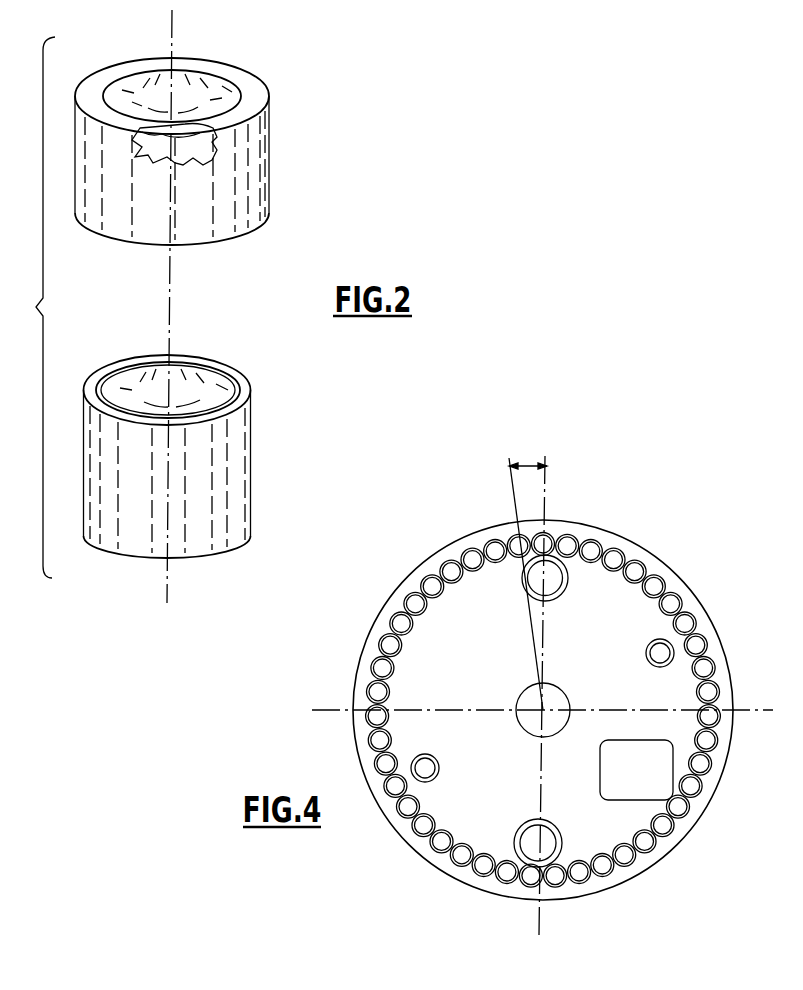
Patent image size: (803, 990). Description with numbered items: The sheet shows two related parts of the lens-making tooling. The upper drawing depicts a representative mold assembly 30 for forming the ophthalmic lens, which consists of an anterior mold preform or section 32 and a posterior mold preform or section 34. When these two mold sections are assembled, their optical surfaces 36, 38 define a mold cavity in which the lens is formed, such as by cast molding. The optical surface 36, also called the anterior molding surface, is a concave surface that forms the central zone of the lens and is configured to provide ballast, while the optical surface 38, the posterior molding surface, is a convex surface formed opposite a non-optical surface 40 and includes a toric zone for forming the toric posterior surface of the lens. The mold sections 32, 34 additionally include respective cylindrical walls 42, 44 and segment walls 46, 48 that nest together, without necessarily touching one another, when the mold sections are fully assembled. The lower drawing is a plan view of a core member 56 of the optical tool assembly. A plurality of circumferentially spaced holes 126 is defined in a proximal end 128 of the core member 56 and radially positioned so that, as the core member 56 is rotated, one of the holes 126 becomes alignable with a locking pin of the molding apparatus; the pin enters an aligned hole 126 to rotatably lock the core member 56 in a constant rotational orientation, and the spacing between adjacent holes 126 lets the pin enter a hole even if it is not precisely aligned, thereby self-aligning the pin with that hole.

In FIG. 2, the mold assembly 30 is at (171, 308).
In FIG. 2, the anterior mold section 32 is at (199, 471).
In FIG. 2, the posterior mold section 34 is at (207, 127).
In FIG. 2, the optical surface 36 is at (203, 378).
In FIG. 2, the optical surface 38 is at (165, 140).
In FIG. 2, the non-optical surface 40 is at (187, 80).
In FIG. 2, the cylindrical wall 42 is at (250, 430).
In FIG. 2, the cylindrical wall 44 is at (270, 172).
In FIG. 2, the segment wall 46 is at (242, 383).
In FIG. 2, the segment wall 48 is at (233, 72).
In FIG. 4, the core member 56 is at (537, 702).
In FIG. 4, the circumferentially spaced holes 126 is at (476, 875).
In FIG. 4, the proximal end 128 is at (608, 607).